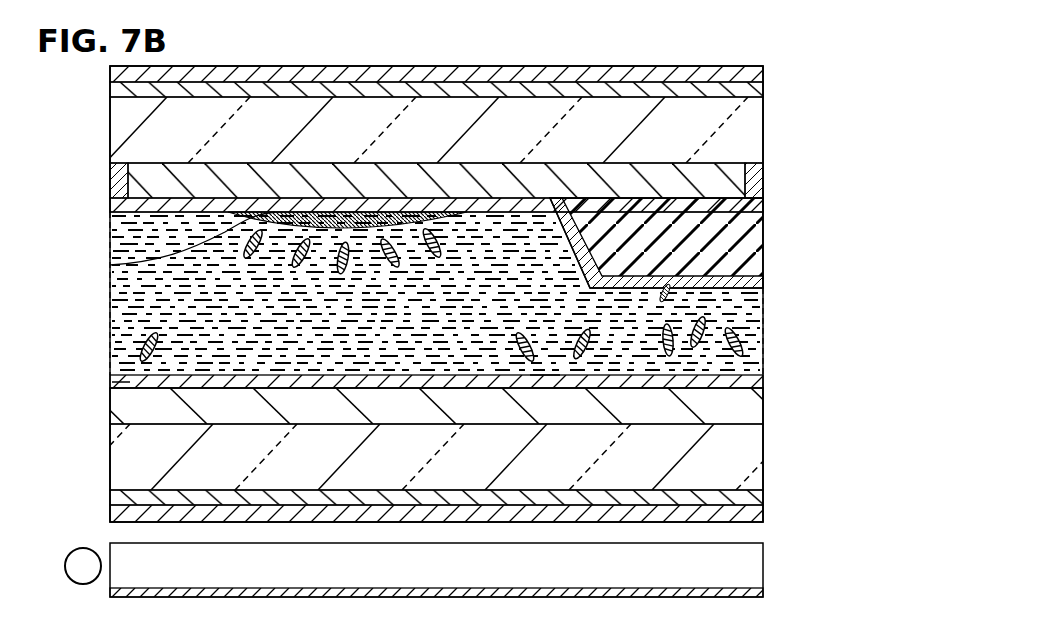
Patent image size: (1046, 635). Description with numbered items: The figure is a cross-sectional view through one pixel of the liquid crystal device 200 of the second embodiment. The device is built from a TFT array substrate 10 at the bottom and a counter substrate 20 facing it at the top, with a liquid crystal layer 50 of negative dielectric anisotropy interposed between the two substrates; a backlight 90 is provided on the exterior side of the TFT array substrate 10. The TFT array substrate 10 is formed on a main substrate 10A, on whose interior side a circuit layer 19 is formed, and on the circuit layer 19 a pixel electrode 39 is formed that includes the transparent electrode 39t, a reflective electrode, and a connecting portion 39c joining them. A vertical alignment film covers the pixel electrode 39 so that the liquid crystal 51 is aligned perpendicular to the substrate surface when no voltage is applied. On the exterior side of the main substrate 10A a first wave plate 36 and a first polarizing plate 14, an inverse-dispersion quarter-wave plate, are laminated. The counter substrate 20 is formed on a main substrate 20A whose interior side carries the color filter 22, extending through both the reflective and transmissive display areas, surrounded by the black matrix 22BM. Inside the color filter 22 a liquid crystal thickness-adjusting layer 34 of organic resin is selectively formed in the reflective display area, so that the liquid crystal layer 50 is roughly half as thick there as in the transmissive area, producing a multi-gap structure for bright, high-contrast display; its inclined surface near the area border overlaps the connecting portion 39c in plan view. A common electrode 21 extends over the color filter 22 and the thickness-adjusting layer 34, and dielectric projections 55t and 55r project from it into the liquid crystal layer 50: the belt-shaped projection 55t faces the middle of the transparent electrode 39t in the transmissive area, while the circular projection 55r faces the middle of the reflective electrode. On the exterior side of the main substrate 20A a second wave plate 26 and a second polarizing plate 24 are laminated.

The liquid crystal device 200 is at (800, 46).
The counter substrate 20 is at (105, 210).
The second polarizing plate 24 is at (763, 76).
The retardation film 26 is at (763, 96).
The main substrate 20A is at (755, 135).
The color filter 22 is at (742, 162).
The black matrix 22BM is at (763, 190).
The liquid crystal thickness-adjusting layer 34 is at (763, 232).
The common electrode 21 is at (763, 283).
The liquid crystal layer 50 is at (755, 320).
The dielectric projection 55t is at (112, 265).
The liquid crystal 51 is at (248, 262).
The dielectric projection 55r is at (660, 302).
The pixel electrode 39 is at (763, 375).
The connecting portion 39c is at (542, 378).
The transparent electrode 39t is at (118, 378).
The TFT array substrate 10 is at (105, 390).
The circuit layer 19 is at (755, 410).
The main substrate 10A is at (755, 458).
The first wave plate 36 is at (757, 500).
The first polarizing plate 14 is at (763, 518).
The backlight 90 is at (768, 545).